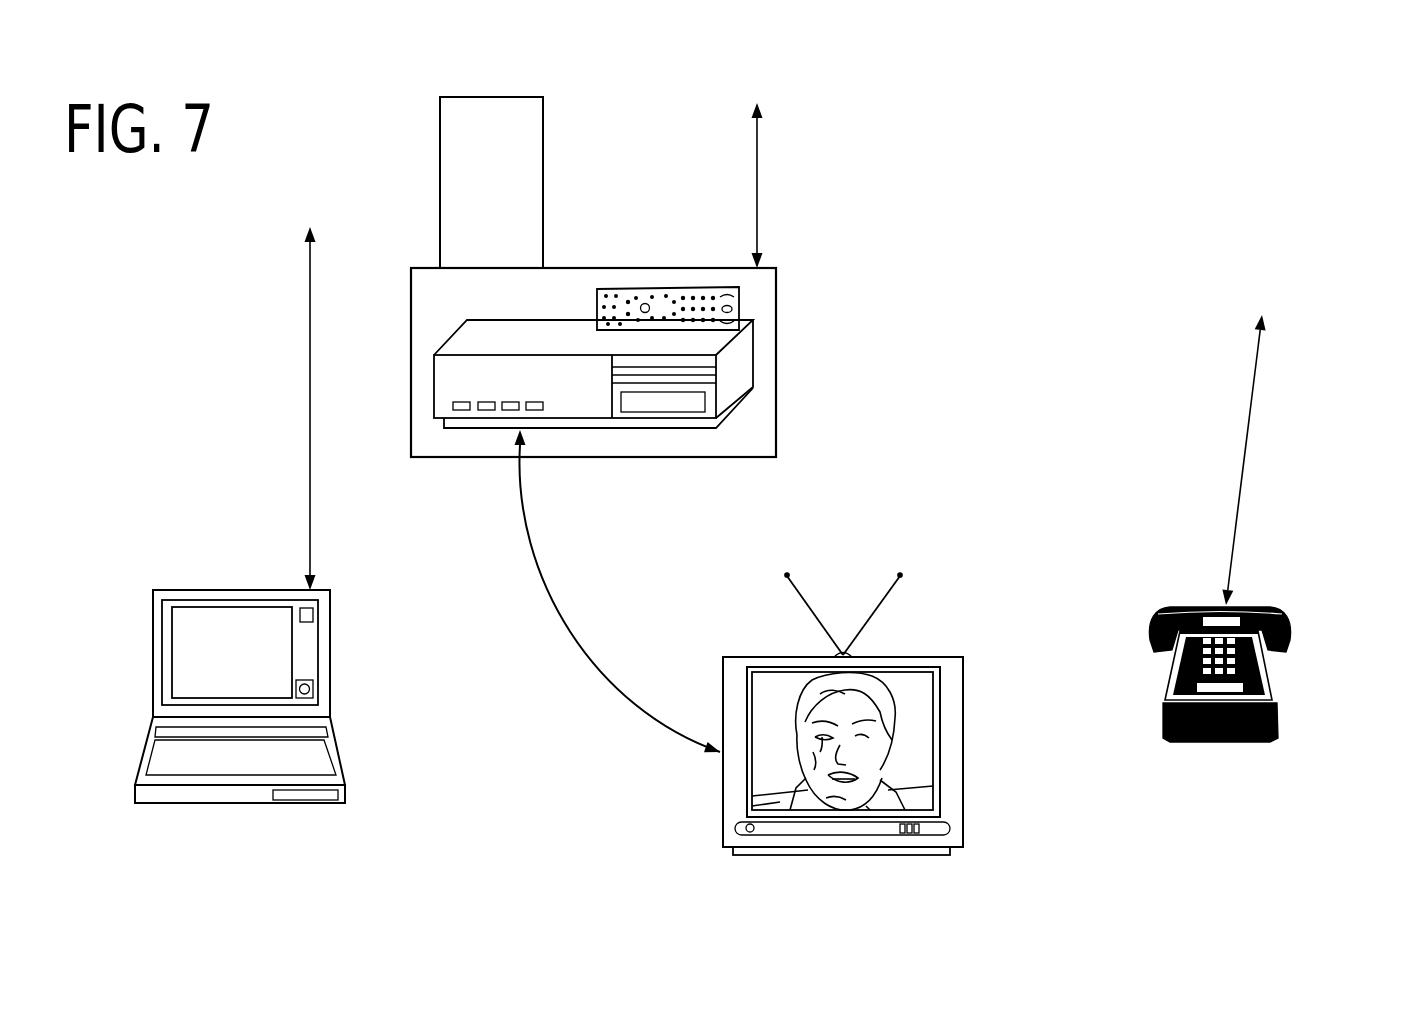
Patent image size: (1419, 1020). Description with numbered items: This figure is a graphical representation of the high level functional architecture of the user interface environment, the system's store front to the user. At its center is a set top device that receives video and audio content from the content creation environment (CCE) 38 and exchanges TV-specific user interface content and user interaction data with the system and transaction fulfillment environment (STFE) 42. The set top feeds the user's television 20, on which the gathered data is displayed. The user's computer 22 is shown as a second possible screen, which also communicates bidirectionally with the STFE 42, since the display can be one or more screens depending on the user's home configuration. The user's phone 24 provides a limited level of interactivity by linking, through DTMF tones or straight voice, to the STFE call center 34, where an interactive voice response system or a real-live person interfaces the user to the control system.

The television 20 is at (965, 820).
The computer 22 is at (328, 805).
The phone 24 is at (1278, 697).
The call center 34 is at (1333, 262).
The content creation environment (CCE) 38 is at (538, 60).
The system and transaction fulfillment environment (STFE) 42 is at (338, 197).